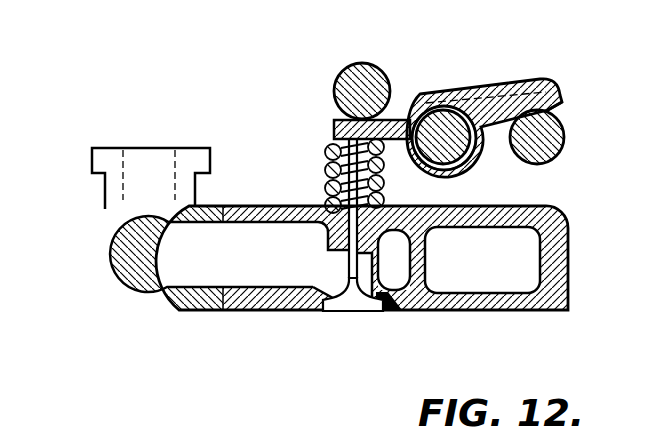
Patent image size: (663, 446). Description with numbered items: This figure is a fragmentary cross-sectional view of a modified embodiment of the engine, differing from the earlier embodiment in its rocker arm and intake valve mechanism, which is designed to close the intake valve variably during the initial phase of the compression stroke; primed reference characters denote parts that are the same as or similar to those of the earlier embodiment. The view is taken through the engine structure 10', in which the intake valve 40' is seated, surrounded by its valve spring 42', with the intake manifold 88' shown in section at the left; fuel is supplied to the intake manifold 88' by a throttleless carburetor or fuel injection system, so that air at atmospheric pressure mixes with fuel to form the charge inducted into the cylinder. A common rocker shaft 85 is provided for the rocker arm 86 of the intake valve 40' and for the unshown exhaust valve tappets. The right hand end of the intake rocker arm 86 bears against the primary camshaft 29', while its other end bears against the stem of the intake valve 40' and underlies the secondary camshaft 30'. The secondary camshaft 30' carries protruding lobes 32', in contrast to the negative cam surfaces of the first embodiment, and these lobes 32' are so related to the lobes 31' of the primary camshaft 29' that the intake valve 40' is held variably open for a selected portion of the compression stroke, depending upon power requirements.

The housing 10' is at (367, 229).
The intake manifold 88' is at (172, 260).
The intake valve 40' is at (353, 253).
The valve spring 42' is at (325, 176).
The protruding lobes 32' is at (379, 87).
The secondary camshaft 30' is at (343, 74).
The rocker arm 86 is at (512, 80).
The rocker shaft 85 is at (440, 127).
The primary camshaft 29' is at (565, 137).
The lobes 31' is at (585, 89).